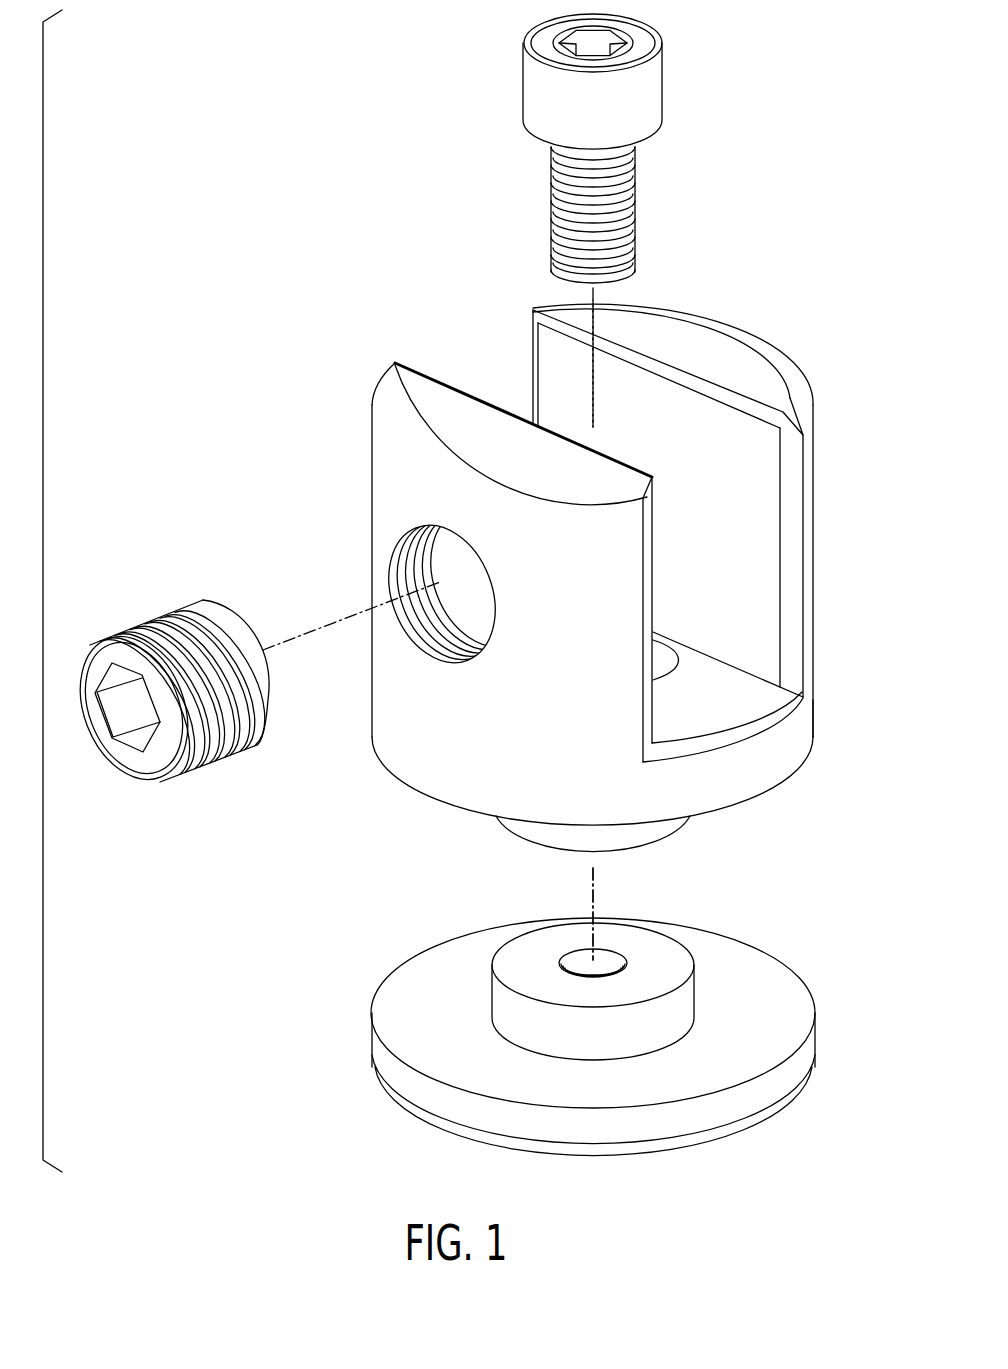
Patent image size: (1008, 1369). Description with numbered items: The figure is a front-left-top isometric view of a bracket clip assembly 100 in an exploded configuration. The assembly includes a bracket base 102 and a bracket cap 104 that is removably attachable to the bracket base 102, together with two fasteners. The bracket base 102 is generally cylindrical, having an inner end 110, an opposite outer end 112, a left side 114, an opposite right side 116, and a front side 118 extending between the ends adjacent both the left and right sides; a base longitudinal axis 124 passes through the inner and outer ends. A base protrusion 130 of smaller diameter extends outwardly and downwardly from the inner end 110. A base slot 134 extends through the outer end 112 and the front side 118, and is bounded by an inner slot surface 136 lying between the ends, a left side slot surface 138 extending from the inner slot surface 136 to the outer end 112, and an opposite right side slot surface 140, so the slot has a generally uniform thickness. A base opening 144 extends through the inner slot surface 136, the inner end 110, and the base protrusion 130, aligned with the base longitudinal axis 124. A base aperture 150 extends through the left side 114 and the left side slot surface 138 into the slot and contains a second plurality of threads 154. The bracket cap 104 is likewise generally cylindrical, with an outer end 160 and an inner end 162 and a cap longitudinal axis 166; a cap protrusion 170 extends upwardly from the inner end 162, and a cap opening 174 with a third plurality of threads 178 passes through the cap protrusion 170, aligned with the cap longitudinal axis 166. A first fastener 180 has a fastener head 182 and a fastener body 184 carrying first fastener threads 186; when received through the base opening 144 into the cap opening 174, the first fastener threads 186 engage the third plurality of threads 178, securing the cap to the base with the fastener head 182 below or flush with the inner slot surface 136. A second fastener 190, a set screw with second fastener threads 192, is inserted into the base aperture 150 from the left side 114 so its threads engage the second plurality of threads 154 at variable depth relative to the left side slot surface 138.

The bracket clip assembly 100 is at (357, 218).
The bracket base 102 is at (583, 561).
The bracket cap 104 is at (585, 1035).
The inner end 110 is at (457, 812).
The outer end 112 is at (710, 347).
The left side 114 is at (417, 745).
The right side 116 is at (790, 358).
The front side 118 is at (770, 758).
The base longitudinal axis 124 is at (595, 390).
The base protrusion 130 is at (647, 838).
The base slot 134 is at (497, 355).
The inner slot surface 136 is at (728, 698).
The left side slot surface 138 is at (428, 372).
The right side slot surface 140 is at (735, 520).
The base opening 144 is at (680, 668).
The base aperture 150 is at (421, 586).
The second plurality of threads 154 is at (410, 565).
The outer end 160 is at (638, 1160).
The inner end 162 is at (772, 990).
The cap longitudinal axis 166 is at (593, 880).
The cap protrusion 170 is at (530, 1017).
The cap opening 174 is at (622, 925).
The third plurality of threads 178 is at (605, 962).
The first fastener 180 is at (581, 148).
The fastener head 182 is at (623, 112).
The fastener body 184 is at (576, 215).
The first fastener threads 186 is at (549, 201).
The second fastener 190 is at (165, 683).
The second fastener threads 192 is at (183, 630).